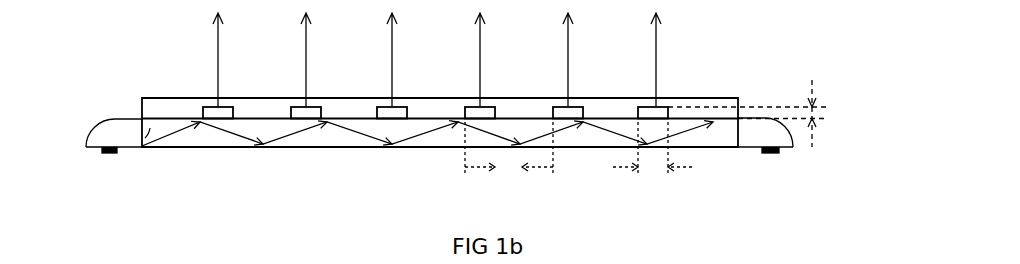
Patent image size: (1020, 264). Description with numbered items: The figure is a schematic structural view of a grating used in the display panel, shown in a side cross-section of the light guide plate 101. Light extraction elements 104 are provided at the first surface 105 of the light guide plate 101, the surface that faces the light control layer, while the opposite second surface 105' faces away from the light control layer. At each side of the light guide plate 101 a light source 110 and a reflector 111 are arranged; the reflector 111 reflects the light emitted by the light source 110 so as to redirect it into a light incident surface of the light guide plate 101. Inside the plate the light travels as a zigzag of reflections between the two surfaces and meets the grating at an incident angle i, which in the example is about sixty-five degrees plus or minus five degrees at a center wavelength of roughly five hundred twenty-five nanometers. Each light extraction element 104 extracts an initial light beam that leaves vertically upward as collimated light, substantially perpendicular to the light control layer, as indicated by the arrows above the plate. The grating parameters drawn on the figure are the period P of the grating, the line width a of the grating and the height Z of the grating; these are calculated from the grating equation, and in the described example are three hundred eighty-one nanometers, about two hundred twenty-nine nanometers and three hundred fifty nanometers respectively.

The light guide plate 101 is at (182, 138).
The light extraction element 104 is at (393, 116).
The first surface 105 is at (460, 87).
The second surface 105' is at (448, 171).
The light source 110 is at (117, 153).
The reflector 111 is at (112, 121).
The incident angle i is at (144, 136).
The period of grating P is at (509, 149).
The line width of grating a is at (652, 149).
The height of grating Z is at (758, 113).